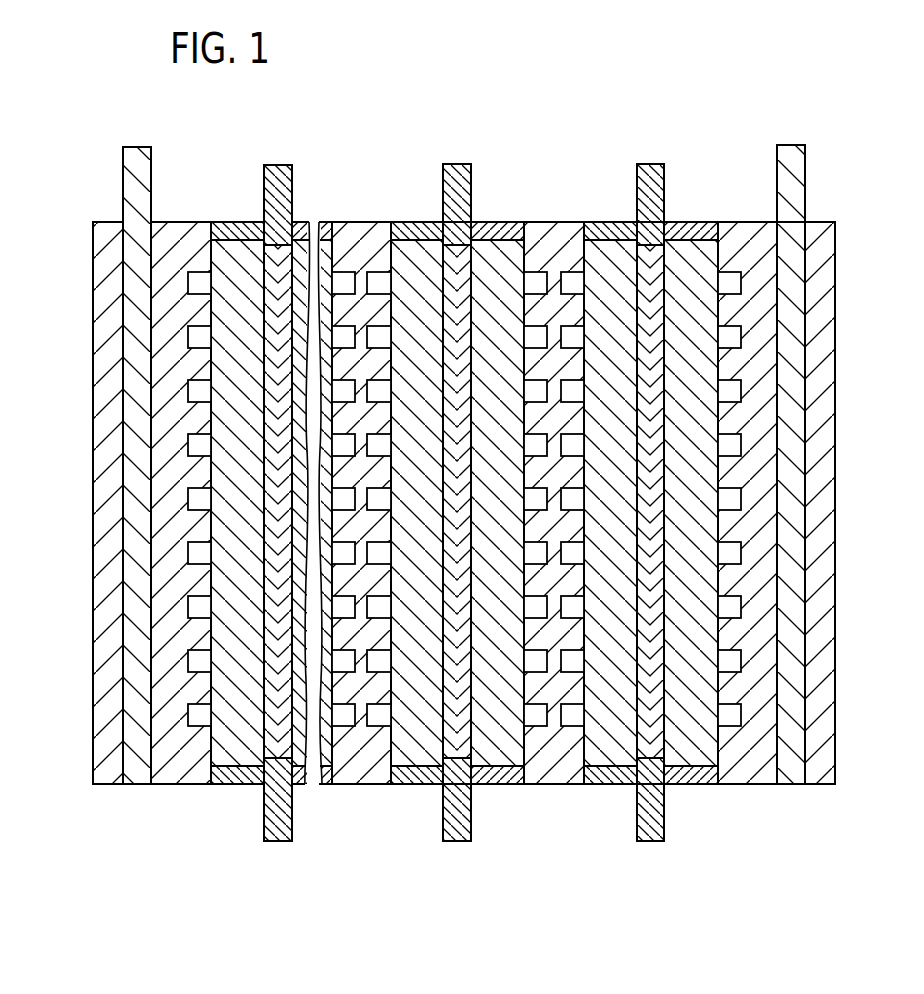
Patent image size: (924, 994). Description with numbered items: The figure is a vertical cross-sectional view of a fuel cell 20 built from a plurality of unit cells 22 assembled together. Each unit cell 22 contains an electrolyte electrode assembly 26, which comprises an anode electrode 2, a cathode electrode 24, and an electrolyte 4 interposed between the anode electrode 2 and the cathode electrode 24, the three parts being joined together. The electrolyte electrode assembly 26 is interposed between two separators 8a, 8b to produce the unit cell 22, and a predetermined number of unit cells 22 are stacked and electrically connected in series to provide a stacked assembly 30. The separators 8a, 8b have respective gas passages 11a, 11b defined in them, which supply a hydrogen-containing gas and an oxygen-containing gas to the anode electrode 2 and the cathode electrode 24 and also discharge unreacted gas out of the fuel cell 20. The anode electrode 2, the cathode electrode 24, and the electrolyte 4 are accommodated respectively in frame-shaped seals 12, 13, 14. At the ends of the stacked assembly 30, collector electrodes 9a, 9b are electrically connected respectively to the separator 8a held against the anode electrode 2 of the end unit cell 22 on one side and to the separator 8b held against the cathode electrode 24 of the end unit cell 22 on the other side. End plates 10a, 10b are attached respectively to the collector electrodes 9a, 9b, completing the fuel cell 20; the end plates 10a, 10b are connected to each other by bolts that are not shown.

The anode electrode 2 is at (239, 752).
The electrolyte 4 is at (457, 830).
The separator 8a is at (185, 237).
The separator 8b is at (553, 235).
The collector electrode 9a is at (133, 165).
The collector electrode 9b is at (790, 160).
The end plate 10a is at (103, 230).
The end plate 10b is at (823, 228).
The gas passage 11a is at (190, 286).
The gas passage 11b is at (340, 347).
The frame-shaped seal 12 is at (427, 222).
The frame-shaped seal 13 is at (488, 222).
The frame-shaped seal 14 is at (455, 165).
The fuel cell 20 is at (657, 121).
The unit cell 22 is at (593, 93).
The cathode electrode 24 is at (507, 754).
The electrolyte electrode assembly 26 is at (387, 873).
The stacked assembly 30 is at (237, 194).